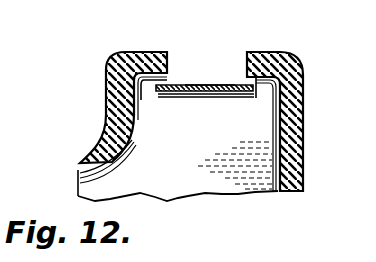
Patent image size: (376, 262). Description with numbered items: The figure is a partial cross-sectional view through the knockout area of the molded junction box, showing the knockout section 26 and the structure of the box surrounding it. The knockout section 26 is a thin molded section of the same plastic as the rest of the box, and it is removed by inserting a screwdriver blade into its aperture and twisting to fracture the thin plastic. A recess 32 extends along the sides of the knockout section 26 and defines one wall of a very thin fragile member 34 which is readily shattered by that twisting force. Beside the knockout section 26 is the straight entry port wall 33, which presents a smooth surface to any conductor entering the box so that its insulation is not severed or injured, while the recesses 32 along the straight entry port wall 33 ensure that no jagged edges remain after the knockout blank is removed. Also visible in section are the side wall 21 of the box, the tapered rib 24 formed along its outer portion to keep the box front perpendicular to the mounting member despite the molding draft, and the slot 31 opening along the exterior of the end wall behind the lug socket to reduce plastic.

The side wall 21 is at (303, 188).
The tapered rib 24 is at (306, 118).
The knockout section 26 is at (222, 96).
The slot 31 is at (100, 135).
The recess 32 is at (231, 83).
The straight entry port wall 33 is at (190, 52).
The thin fragile member 34 is at (148, 92).